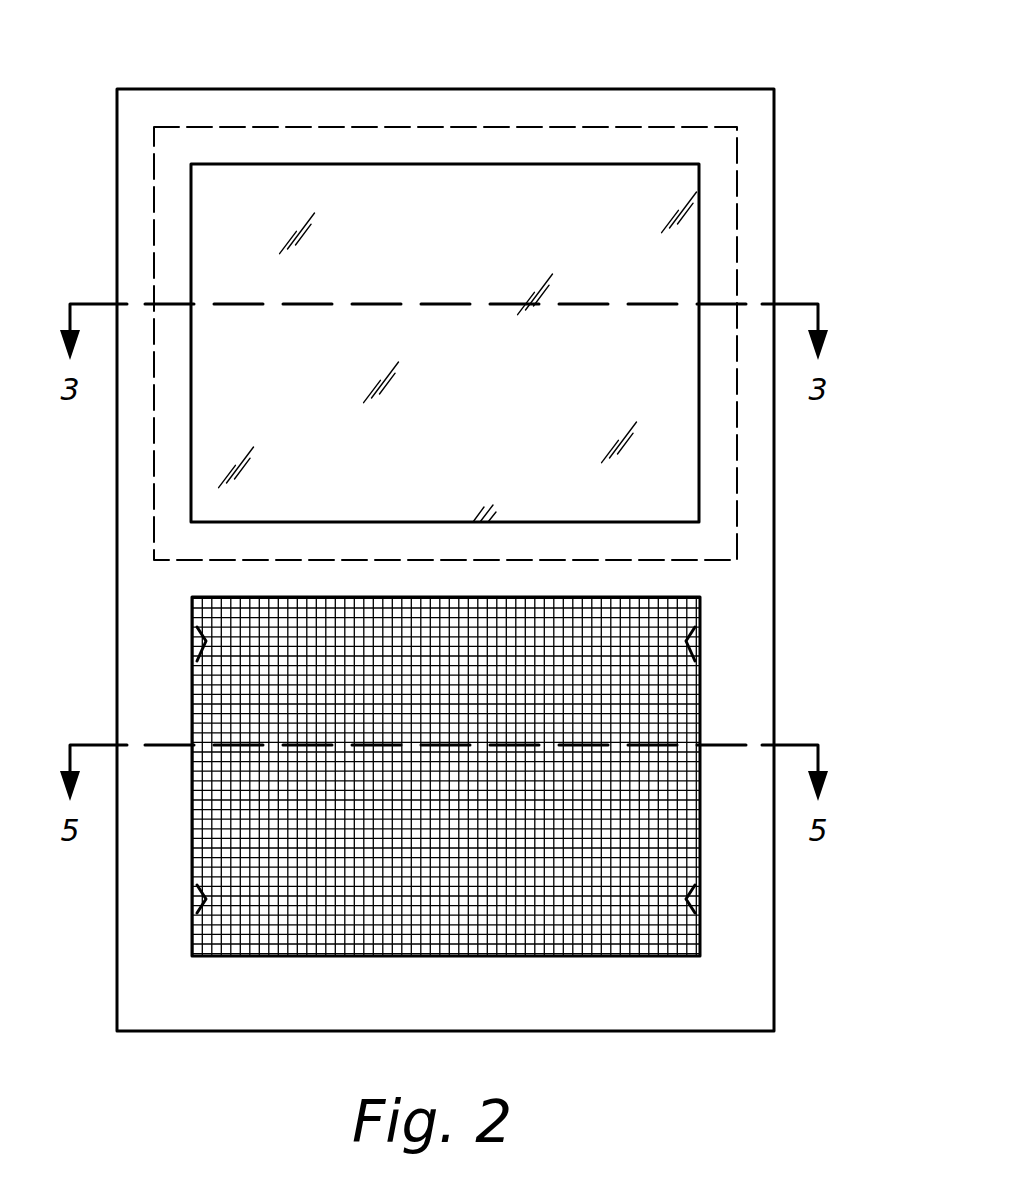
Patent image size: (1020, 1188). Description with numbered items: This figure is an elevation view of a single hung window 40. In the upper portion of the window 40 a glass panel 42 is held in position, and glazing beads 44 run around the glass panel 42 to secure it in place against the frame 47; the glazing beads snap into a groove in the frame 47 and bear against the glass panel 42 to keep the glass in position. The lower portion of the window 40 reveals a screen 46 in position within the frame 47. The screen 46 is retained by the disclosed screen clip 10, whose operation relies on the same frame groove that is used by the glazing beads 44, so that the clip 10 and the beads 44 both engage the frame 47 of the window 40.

The single hung window 40 is at (777, 120).
The glazing beads 44 is at (558, 152).
The glass panel 42 is at (632, 192).
The frame 47 is at (760, 508).
The screen clip 10 is at (688, 650).
The screen 46 is at (658, 717).